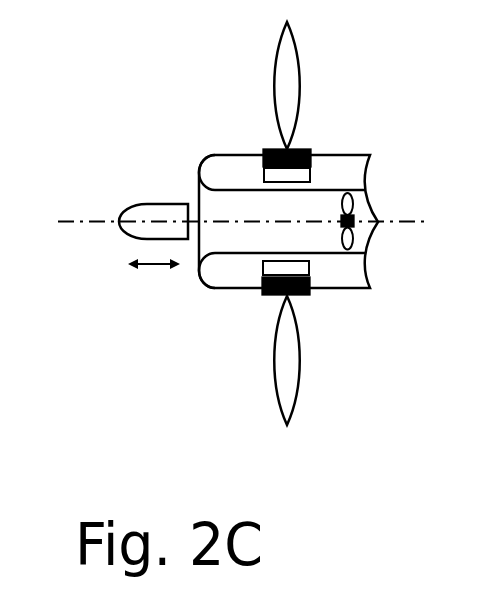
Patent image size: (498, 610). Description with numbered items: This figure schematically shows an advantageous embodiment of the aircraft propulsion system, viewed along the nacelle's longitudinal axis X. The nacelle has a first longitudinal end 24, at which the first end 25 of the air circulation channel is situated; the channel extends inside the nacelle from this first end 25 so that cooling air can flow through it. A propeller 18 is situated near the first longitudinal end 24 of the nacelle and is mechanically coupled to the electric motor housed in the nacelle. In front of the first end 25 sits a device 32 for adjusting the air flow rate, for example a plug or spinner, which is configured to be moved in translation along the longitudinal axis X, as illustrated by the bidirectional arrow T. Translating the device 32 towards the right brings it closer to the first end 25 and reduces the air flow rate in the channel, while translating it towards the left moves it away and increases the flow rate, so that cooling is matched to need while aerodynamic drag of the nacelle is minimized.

The propeller 18 is at (303, 56).
The first longitudinal end 24 is at (213, 322).
The first end of the air circulation channel 25 is at (190, 193).
The device for adjusting the air flow rate 32 is at (123, 229).
The longitudinal axis X is at (69, 221).
The bidirectional arrow T is at (154, 287).